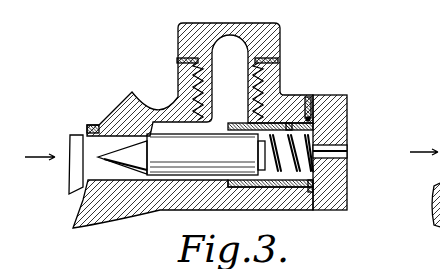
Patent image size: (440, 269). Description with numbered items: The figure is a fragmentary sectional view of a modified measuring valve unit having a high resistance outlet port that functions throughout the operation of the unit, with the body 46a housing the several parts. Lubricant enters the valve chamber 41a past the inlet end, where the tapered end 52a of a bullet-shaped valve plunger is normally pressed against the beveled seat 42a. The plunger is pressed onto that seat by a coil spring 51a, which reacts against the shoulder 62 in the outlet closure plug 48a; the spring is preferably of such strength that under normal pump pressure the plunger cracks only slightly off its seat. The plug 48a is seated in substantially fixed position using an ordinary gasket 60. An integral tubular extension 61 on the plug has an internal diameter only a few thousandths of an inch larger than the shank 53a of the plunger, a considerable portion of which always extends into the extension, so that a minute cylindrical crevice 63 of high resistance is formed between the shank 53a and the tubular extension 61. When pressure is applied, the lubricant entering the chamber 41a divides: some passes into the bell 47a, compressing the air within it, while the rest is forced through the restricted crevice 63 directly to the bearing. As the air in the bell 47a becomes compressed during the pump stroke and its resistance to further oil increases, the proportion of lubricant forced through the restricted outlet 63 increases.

The valve chamber 41a is at (178, 128).
The beveled seat 42a is at (135, 133).
The valve body 46a is at (265, 33).
The bell 47a is at (232, 77).
The outlet closure plug 48a is at (330, 120).
The coil spring 51a is at (288, 133).
The tapered end 52a is at (85, 168).
The shank of the valve plunger 53a is at (181, 167).
The gasket 60 is at (309, 95).
The tubular extension 61 is at (250, 188).
The shoulder 62 is at (347, 132).
The cylindrical crevice 63 is at (243, 134).